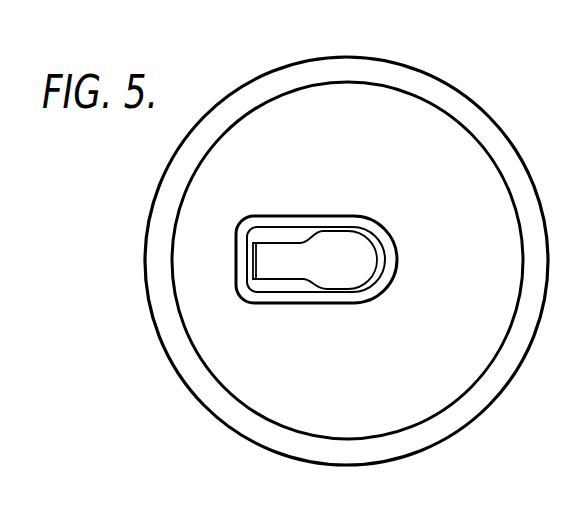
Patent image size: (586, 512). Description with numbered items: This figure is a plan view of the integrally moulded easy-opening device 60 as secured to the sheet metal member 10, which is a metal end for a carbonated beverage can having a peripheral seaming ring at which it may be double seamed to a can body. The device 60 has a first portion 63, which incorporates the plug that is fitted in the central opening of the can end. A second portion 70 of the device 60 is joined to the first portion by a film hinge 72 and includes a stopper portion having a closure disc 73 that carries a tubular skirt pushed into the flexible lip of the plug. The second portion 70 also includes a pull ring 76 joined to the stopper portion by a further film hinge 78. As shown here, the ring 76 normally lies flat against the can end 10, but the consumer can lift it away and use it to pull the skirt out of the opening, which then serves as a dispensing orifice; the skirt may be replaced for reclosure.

The sheet metal member 10 is at (252, 67).
The first portion 63 is at (372, 163).
The easy-opening device 60 is at (262, 313).
The pull ring 76 is at (240, 283).
The second portion 70 is at (278, 252).
The film hinge 72 is at (247, 250).
The film hinge 78 is at (378, 259).
The closure disc 73 is at (346, 284).